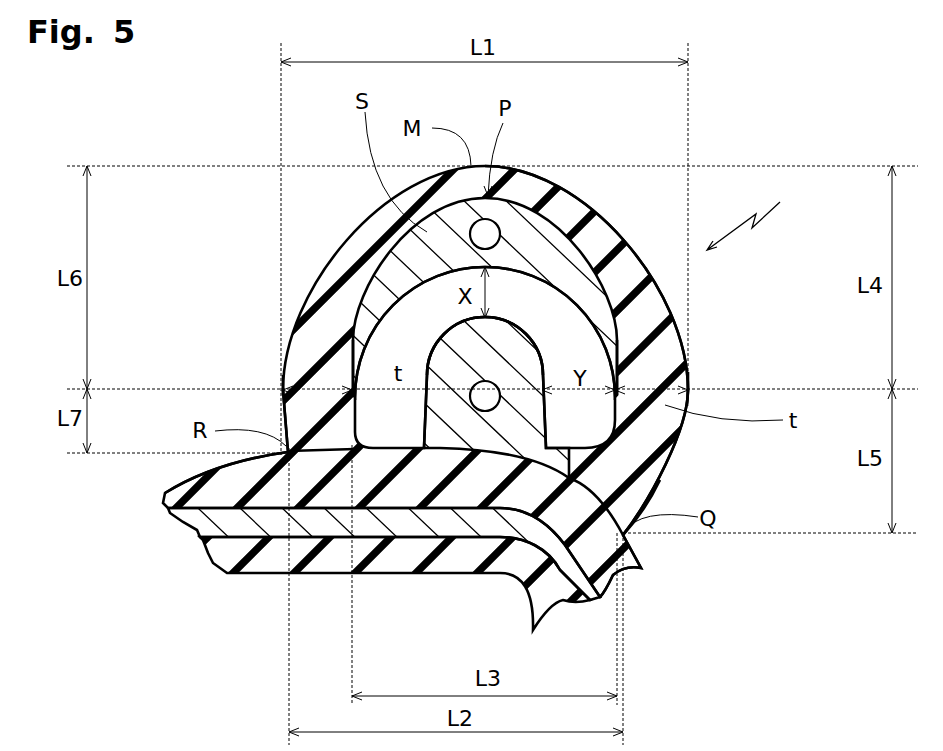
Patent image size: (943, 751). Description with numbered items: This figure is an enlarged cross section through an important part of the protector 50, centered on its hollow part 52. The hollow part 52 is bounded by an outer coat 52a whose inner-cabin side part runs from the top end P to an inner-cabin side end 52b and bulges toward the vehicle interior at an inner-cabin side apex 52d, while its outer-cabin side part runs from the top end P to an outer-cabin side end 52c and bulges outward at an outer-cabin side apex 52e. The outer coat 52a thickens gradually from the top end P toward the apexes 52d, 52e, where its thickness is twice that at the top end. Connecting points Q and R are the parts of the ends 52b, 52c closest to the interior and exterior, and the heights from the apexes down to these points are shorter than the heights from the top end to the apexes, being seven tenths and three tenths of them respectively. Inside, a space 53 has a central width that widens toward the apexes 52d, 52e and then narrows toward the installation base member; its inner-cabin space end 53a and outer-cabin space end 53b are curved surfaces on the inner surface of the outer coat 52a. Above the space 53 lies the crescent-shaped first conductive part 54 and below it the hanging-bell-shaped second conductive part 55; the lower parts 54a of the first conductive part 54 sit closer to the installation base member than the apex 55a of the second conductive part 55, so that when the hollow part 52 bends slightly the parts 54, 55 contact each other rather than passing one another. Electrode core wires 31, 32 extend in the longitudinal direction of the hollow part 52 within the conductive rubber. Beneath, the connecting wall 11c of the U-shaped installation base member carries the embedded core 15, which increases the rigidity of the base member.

The weather strip assembly 50 is at (758, 219).
The hollow part 52 is at (541, 167).
The outer coat 52a is at (572, 212).
The inner-cabin side end 52b is at (645, 520).
The outer-cabin side end 52c is at (235, 460).
The inner-cabin side apex 52d is at (690, 392).
The outer-cabin side apex 52e is at (283, 387).
The space 53 is at (650, 318).
The inner-cabin space end 53a is at (625, 508).
The outer-cabin space end 53b is at (283, 412).
The first conductive part 54 is at (380, 262).
The lower parts of the first conductive part 54a is at (303, 323).
The second conductive part 55 is at (612, 468).
The apex of the second conductive part 55a is at (545, 288).
The core wire 31 is at (497, 228).
The core wire 32 is at (498, 388).
The core 15 is at (247, 528).
The connecting wall 11c is at (462, 590).